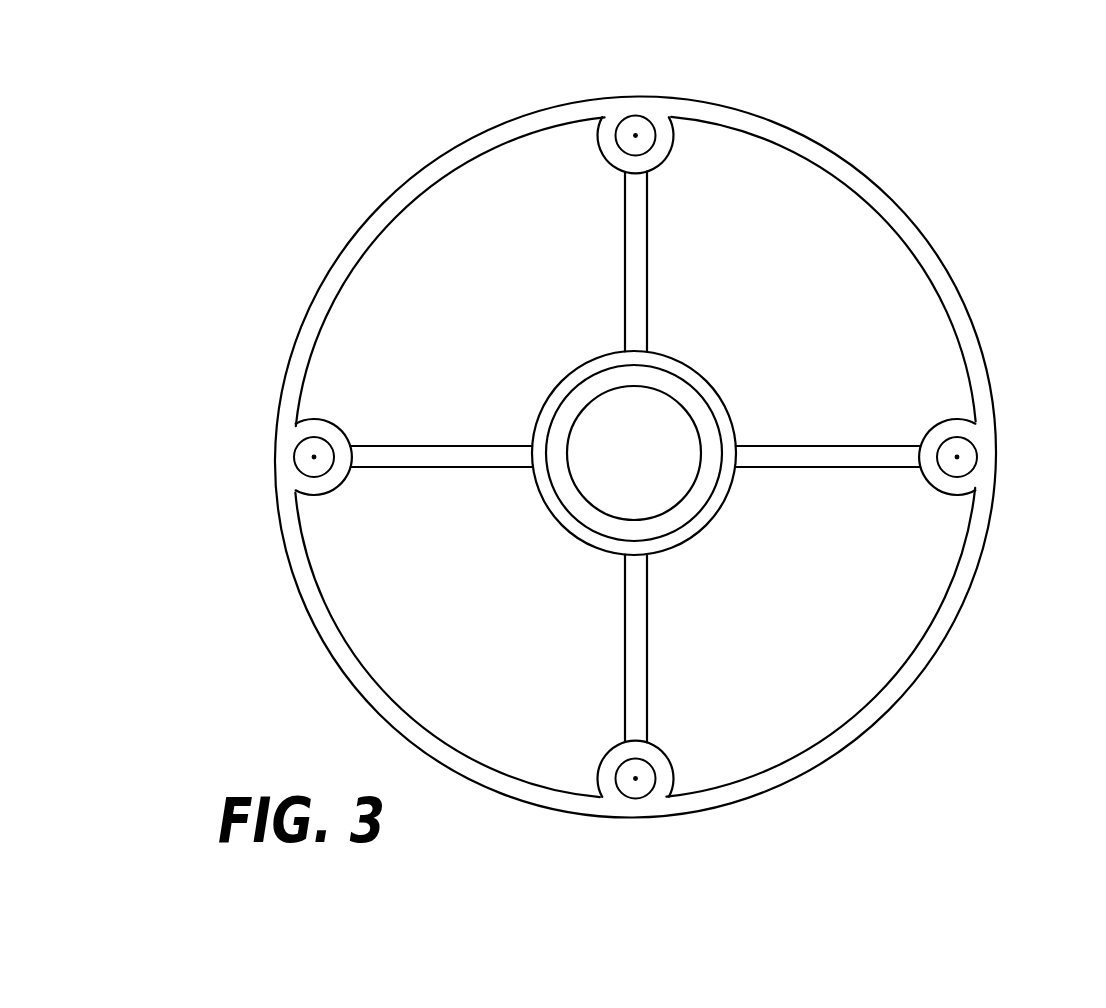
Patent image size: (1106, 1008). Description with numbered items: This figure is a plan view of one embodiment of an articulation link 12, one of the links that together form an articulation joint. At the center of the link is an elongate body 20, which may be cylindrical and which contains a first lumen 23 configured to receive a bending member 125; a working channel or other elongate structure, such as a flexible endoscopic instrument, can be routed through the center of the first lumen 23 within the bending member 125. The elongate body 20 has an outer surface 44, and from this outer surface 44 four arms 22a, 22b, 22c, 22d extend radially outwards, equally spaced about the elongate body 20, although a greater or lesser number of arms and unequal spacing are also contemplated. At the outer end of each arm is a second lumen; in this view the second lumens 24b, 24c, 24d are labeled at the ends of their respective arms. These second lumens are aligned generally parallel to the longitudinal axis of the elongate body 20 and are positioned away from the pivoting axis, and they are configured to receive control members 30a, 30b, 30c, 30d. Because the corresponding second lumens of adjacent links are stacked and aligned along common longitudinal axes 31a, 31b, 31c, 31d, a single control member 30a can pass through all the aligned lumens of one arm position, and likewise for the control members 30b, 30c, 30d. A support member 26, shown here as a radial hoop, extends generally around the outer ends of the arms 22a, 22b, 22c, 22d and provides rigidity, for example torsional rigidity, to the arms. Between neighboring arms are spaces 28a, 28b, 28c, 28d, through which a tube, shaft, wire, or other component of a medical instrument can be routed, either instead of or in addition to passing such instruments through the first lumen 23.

The articulation link 12 is at (966, 293).
The support member 26 is at (421, 184).
The elongate body 20 is at (711, 388).
The first lumen 23 is at (646, 456).
The outer surface 44 is at (573, 535).
The bending member 125 is at (695, 470).
The arm 22a is at (384, 446).
The arm 22b is at (649, 645).
The arm 22c is at (800, 446).
The arm 22d is at (649, 210).
The space 28a is at (509, 325).
The space 28b is at (504, 628).
The space 28c is at (779, 628).
The space 28d is at (798, 320).
The control member 30a is at (293, 474).
The control member 30b is at (650, 786).
The control member 30c is at (970, 452).
The control member 30d is at (652, 128).
The common longitudinal axis 31a is at (312, 460).
The common longitudinal axis 31b is at (634, 778).
The common longitudinal axis 31c is at (957, 456).
The common longitudinal axis 31d is at (630, 140).
The second lumen 24b is at (634, 788).
The second lumen 24c is at (973, 468).
The second lumen 24d is at (637, 132).